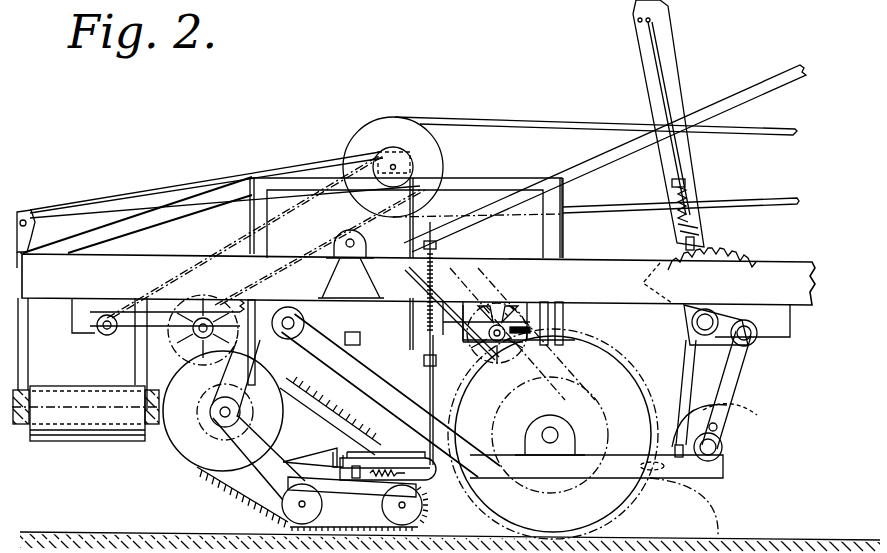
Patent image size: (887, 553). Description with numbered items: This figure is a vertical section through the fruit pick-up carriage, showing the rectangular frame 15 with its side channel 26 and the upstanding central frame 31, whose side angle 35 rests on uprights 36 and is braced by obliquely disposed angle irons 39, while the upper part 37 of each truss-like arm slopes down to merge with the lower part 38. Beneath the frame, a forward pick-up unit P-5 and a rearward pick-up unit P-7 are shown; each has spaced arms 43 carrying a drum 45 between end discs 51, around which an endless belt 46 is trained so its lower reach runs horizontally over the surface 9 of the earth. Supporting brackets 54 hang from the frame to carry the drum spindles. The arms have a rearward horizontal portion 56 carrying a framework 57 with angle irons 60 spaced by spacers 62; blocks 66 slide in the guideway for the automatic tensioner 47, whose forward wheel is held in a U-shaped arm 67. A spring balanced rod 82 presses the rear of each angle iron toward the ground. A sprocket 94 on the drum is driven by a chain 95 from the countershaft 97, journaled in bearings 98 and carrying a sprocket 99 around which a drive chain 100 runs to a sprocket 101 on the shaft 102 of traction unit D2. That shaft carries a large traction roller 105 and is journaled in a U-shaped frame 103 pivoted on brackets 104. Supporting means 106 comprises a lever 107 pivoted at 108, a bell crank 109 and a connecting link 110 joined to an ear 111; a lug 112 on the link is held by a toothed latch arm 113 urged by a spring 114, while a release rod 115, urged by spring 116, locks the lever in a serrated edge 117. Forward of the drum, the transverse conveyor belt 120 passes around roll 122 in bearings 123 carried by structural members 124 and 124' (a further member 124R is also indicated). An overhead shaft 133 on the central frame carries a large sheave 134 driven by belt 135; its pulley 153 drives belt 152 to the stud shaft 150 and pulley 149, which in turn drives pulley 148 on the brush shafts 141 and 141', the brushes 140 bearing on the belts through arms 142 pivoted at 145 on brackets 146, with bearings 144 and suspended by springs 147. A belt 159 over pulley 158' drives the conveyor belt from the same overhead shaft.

The surface of the earth 9 is at (52, 530).
The frame 15 is at (83, 260).
The side channel 26 is at (651, 289).
The central frame 31 is at (500, 172).
The side angle 35 is at (458, 180).
The upright 36 is at (246, 217).
The upper part of truss-like arm 37 is at (730, 97).
The lower part of truss-like arm 38 is at (498, 245).
The obliquely disposed angle iron 39 is at (117, 226).
The arm 43 is at (276, 480).
The drum 45 is at (180, 455).
The endless belt 46 is at (252, 490).
The automatic tensioner 47 is at (380, 512).
The end disc 51 is at (200, 462).
The supporting bracket 54 is at (257, 350).
The rearwardly extending horizontal portion 56 is at (322, 507).
The rearward framework 57 is at (378, 440).
The angle iron 60 is at (407, 457).
The spacer 62 is at (338, 452).
The block 66 is at (362, 466).
The U-shaped arm 67 is at (300, 452).
The spring balanced rod 82 is at (434, 237).
The sprocket 94 is at (205, 432).
The chain 95 is at (332, 318).
The countershaft 97 is at (350, 238).
The bearing 98 is at (333, 265).
The sprocket 99 is at (333, 245).
The drive chain 100 is at (432, 367).
The sprocket 101 is at (578, 442).
The shaft 102 is at (557, 434).
The U-shaped frame 103 is at (645, 482).
The bracket 104 is at (318, 334).
The traction roller 105 is at (614, 383).
The supporting means 106 is at (751, 369).
The lever 107 is at (668, 40).
The pivotal mounting 108 is at (700, 325).
The bell crank 109 is at (717, 358).
The connecting link 110 is at (730, 393).
The ear 111 is at (722, 447).
The lug 112 is at (735, 430).
The latch arm 113 is at (692, 422).
The spring 114 is at (662, 470).
The release rod 115 is at (662, 78).
The spring 116 is at (690, 192).
The serrated edge 117 is at (727, 248).
The belt 120 is at (90, 387).
The roll 122 is at (93, 425).
The bearing 123 is at (22, 425).
The structural member 124 is at (40, 344).
The structural member 124' is at (134, 354).
The frame member 124R is at (490, 378).
The overhead shaft 133 is at (395, 164).
The large sheave 134 is at (375, 125).
The belt 135 is at (558, 120).
The brush 140 is at (227, 305).
The shaft 141 is at (197, 303).
The shaft 141' is at (507, 314).
The arm 142 is at (138, 318).
The bearing 144 is at (205, 342).
The pivotal mounting 145 is at (118, 300).
The bracket 146 is at (360, 345).
The spring 147 is at (245, 306).
The pulley 148 is at (470, 345).
The pulley 149 is at (110, 336).
The stud shaft 150 is at (102, 332).
The belt 152 is at (298, 248).
The pulley 153 is at (375, 160).
The pulley 158' is at (18, 221).
The belt 159 is at (183, 184).
The traction unit D2 is at (648, 390).
The pick-up unit P-5 is at (210, 490).
The pick-up unit P-7 is at (734, 517).